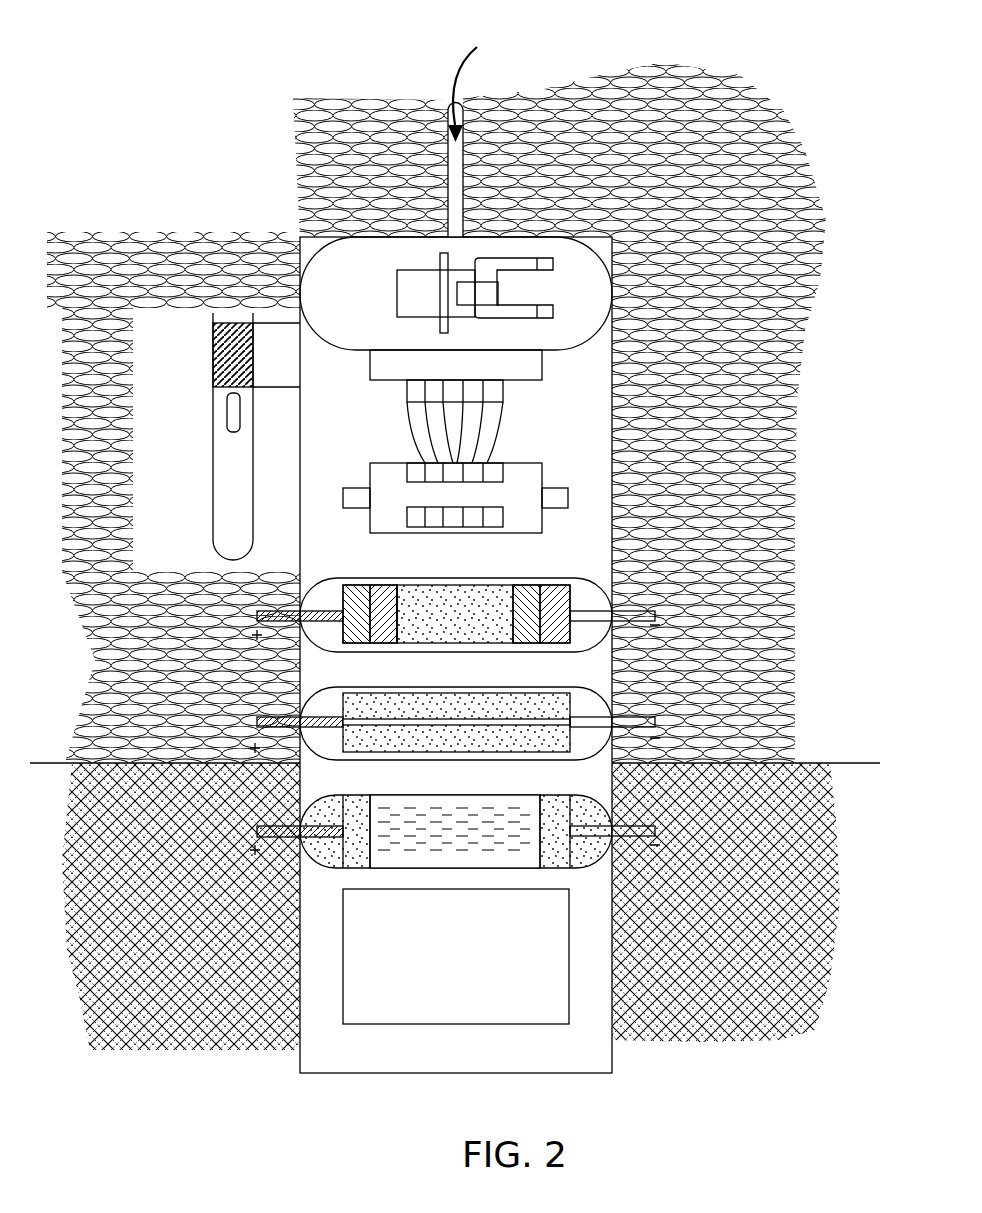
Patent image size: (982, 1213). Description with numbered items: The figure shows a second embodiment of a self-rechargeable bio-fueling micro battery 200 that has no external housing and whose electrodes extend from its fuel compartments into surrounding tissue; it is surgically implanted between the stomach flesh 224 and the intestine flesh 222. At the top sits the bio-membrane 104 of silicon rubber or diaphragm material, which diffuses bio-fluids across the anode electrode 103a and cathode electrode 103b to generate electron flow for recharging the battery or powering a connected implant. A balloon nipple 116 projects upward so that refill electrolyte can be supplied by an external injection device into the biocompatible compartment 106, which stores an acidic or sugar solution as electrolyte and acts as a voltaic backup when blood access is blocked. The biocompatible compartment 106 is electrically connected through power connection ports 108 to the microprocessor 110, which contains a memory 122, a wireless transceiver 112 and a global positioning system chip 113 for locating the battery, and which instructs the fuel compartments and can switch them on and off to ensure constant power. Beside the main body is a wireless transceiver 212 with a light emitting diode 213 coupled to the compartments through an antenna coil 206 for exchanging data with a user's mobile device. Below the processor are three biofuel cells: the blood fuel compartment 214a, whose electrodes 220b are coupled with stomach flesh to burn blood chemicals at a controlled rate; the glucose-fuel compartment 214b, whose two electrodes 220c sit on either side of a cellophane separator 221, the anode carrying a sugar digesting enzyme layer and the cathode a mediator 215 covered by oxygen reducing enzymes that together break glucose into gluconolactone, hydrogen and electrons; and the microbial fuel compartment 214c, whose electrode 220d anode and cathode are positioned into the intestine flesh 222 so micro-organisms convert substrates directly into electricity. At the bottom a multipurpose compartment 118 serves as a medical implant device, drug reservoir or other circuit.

The micro battery 200 is at (236, 38).
The balloon nipple 116 is at (470, 75).
The stomach flesh 224 is at (783, 110).
The anode electrode 103a is at (520, 262).
The cathode electrode 103b is at (522, 312).
The biocompatible compartment 106 is at (596, 250).
The bio-membrane 104 is at (614, 252).
The power connection ports 108 is at (504, 392).
The microprocessor 110 is at (544, 476).
The memory 122 is at (413, 516).
The wireless transceiver 112 is at (504, 518).
The global positioning system chip 113 is at (433, 525).
The antenna coil 206 is at (213, 357).
The light emitting diode 213 is at (227, 405).
The wireless transceiver 212 is at (213, 513).
The mediator 215 is at (299, 715).
The blood fuel compartment 214a is at (612, 578).
The electrodes 220b is at (656, 617).
The cellophane separator 221 is at (455, 722).
The glucose-fuel compartment 214b is at (510, 700).
The electrodes 220c is at (656, 723).
The microbial fuel compartment 214c is at (604, 790).
The electrode 220d is at (656, 831).
The intestine flesh 222 is at (825, 932).
The multipurpose compartment 118 is at (470, 1024).